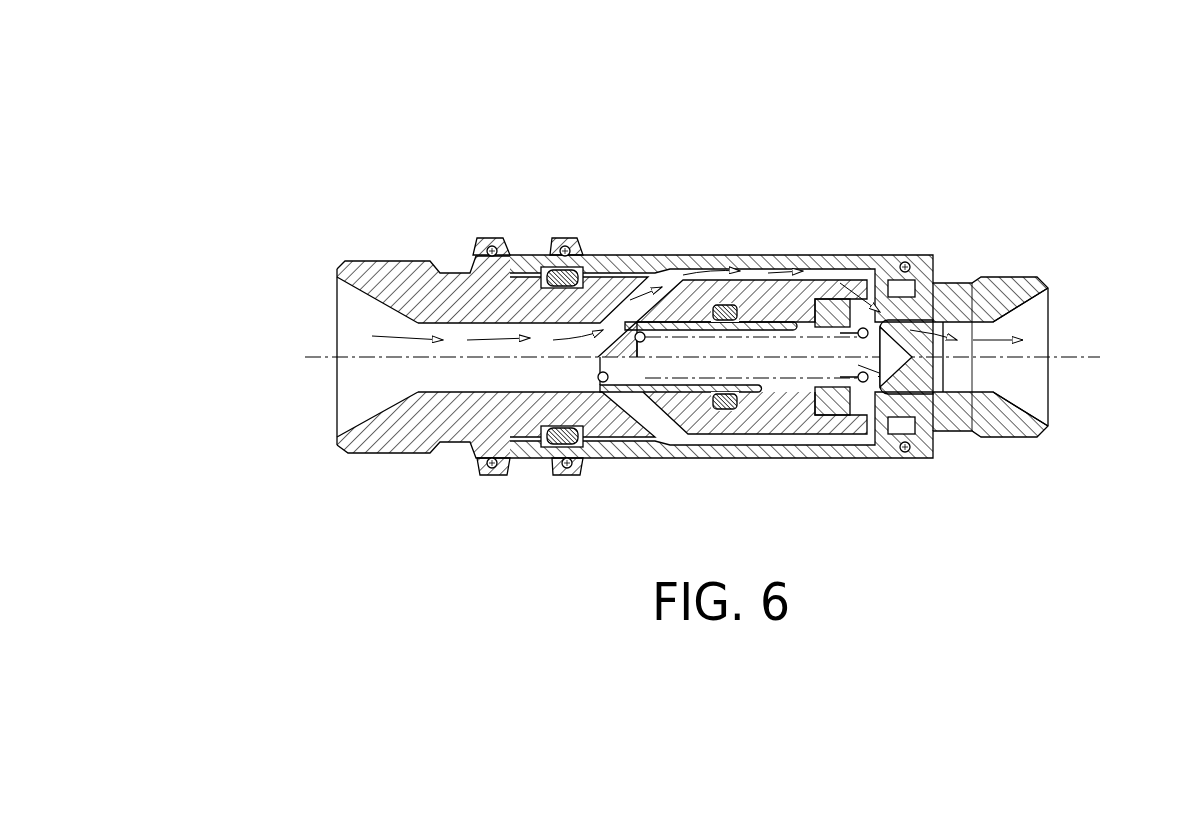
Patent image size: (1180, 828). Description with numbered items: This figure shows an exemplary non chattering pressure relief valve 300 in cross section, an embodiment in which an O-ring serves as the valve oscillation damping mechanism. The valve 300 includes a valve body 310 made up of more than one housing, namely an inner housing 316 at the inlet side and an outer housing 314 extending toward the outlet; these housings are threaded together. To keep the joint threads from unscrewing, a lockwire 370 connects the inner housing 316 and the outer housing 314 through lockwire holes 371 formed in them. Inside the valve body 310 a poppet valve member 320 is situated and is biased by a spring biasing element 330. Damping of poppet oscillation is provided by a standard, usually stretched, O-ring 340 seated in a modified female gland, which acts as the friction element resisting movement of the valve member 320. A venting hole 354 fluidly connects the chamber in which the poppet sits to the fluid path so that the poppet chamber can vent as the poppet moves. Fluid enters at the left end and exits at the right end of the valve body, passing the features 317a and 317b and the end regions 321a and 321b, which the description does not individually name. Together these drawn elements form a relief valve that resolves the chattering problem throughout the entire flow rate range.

The non chattering pressure relief valve 300 is at (694, 291).
The valve body 310 is at (833, 352).
The outer housing 314 is at (850, 254).
The inner housing 316 is at (443, 316).
The inlet opening 317a is at (337, 402).
The outlet opening 317b is at (1050, 383).
The valve member 320 is at (636, 296).
The inlet end 321a is at (372, 256).
The outlet end 321b is at (998, 271).
The biasing element 330 is at (790, 382).
The O-ring 340 is at (728, 402).
The venting hole 354 is at (898, 384).
The lockwire 370 is at (497, 396).
The lockwire holes 371 is at (489, 470).